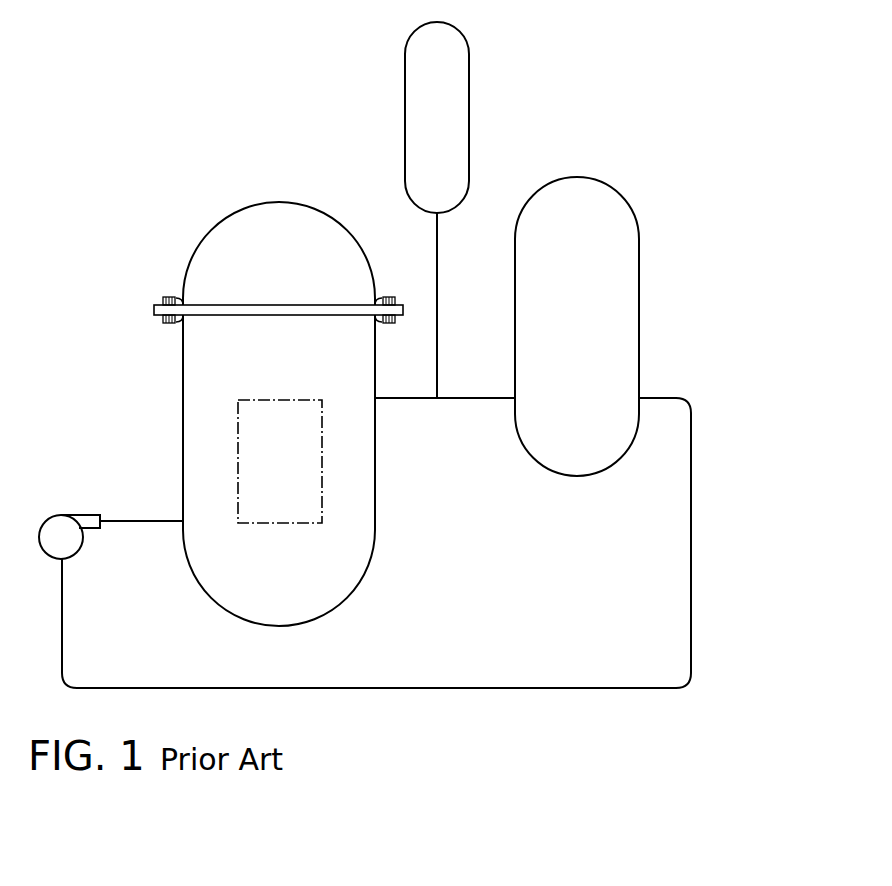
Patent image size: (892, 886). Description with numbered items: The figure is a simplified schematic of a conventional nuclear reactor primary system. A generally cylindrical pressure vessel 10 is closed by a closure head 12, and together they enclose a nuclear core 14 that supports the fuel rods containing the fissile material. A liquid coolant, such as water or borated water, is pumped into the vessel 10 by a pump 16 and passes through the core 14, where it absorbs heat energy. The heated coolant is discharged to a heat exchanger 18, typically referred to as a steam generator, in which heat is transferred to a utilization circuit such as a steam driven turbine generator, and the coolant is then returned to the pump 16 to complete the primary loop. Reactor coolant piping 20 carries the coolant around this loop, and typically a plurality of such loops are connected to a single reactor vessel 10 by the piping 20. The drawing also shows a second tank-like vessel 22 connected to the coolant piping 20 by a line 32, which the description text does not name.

The pressure vessel 10 is at (378, 515).
The closure head 12 is at (193, 258).
The nuclear core 14 is at (238, 447).
The pump 16 is at (57, 515).
The heat exchanger 18 is at (639, 272).
The reactor coolant piping 20 is at (691, 625).
The pressurizer 22 is at (469, 108).
The surge line 32 is at (437, 295).